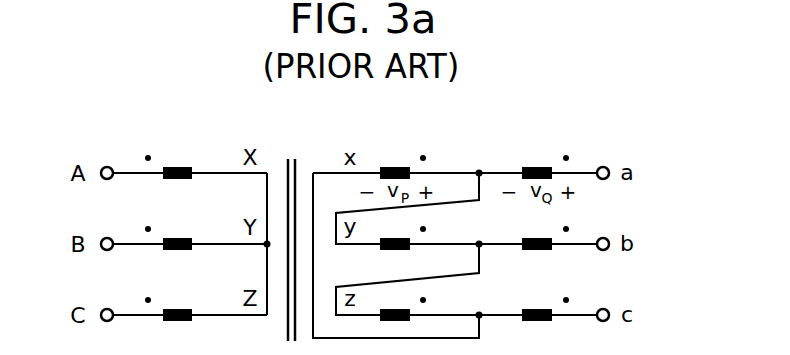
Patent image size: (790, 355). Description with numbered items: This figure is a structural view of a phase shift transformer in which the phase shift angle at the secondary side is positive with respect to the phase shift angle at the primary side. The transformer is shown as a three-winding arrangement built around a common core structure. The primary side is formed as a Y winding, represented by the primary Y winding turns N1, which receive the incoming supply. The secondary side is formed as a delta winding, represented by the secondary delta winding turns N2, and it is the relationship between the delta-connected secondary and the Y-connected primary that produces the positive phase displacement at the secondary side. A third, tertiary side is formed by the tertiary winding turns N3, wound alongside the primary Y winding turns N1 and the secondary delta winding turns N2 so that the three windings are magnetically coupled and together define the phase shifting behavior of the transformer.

The primary Y winding turns N1 is at (169, 228).
The secondary delta winding turns N2 is at (403, 228).
The tertiary winding turns N3 is at (545, 228).